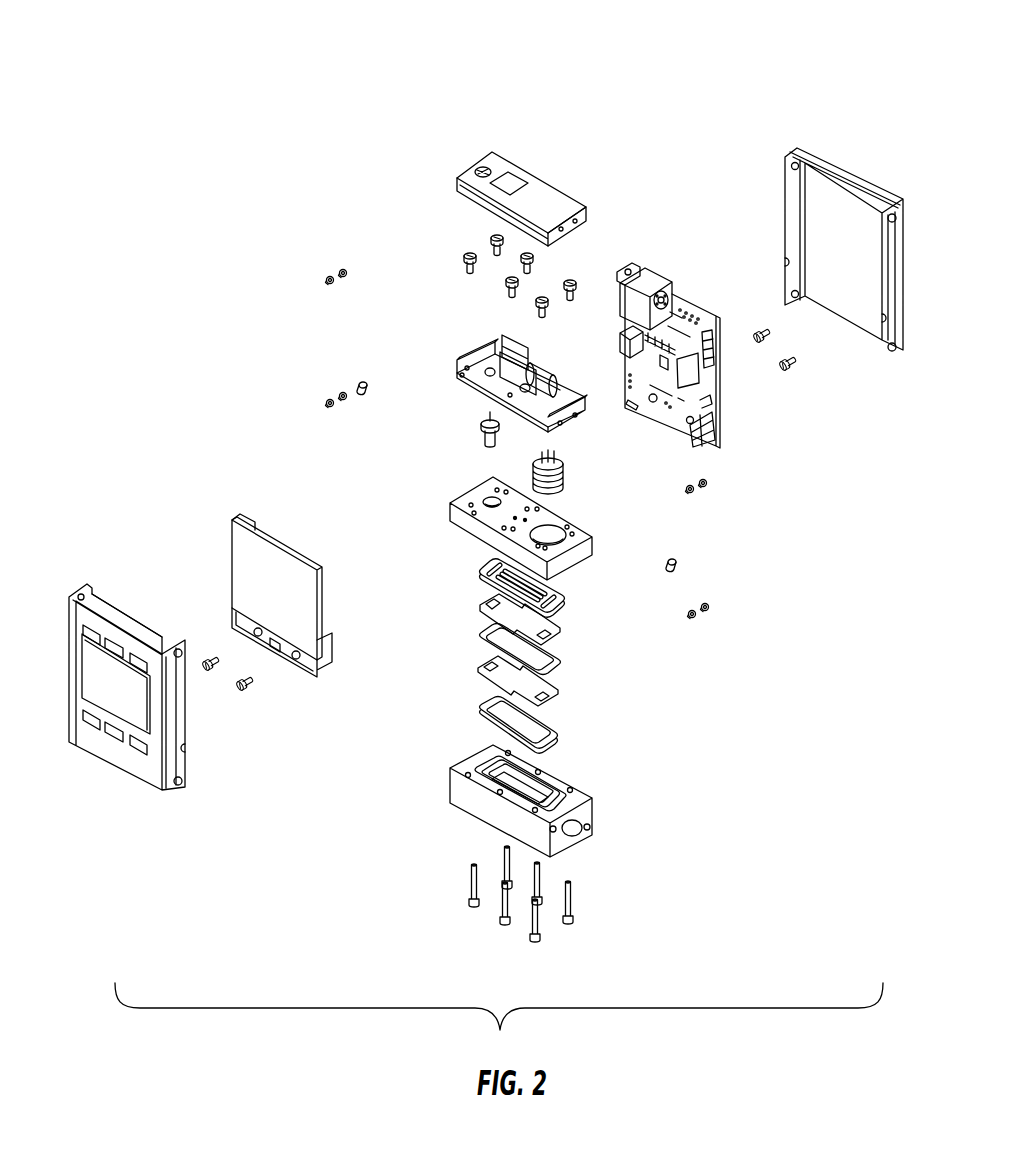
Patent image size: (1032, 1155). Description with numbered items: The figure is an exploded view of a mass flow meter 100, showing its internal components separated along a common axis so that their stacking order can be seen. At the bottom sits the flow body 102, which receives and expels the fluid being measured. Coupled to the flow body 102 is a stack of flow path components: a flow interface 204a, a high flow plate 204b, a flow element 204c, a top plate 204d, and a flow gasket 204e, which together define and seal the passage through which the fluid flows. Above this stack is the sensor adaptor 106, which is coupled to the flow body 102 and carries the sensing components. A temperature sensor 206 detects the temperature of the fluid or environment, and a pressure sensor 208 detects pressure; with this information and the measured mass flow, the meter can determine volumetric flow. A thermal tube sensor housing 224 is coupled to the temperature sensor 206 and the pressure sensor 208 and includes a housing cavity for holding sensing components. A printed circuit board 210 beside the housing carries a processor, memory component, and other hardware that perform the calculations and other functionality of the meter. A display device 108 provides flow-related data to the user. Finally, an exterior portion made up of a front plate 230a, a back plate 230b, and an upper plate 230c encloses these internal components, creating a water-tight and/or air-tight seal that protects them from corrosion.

The flow meter 100 is at (512, 78).
The flow body 102 is at (573, 842).
The sensor adaptor 106 is at (400, 506).
The display device 108 is at (299, 712).
The flow interface 204a is at (460, 712).
The high flow plate 204b is at (467, 662).
The flow element 204c is at (468, 622).
The top plate 204d is at (566, 656).
The flow gasket 204e is at (569, 607).
The temperature sensor 206 is at (472, 415).
The pressure sensor 208 is at (588, 505).
The printed circuit board 210 is at (722, 384).
The thermal tube sensor housing 224 is at (473, 330).
The front plate 230a is at (47, 630).
The back plate 230b is at (856, 178).
The upper plate 230c is at (457, 180).